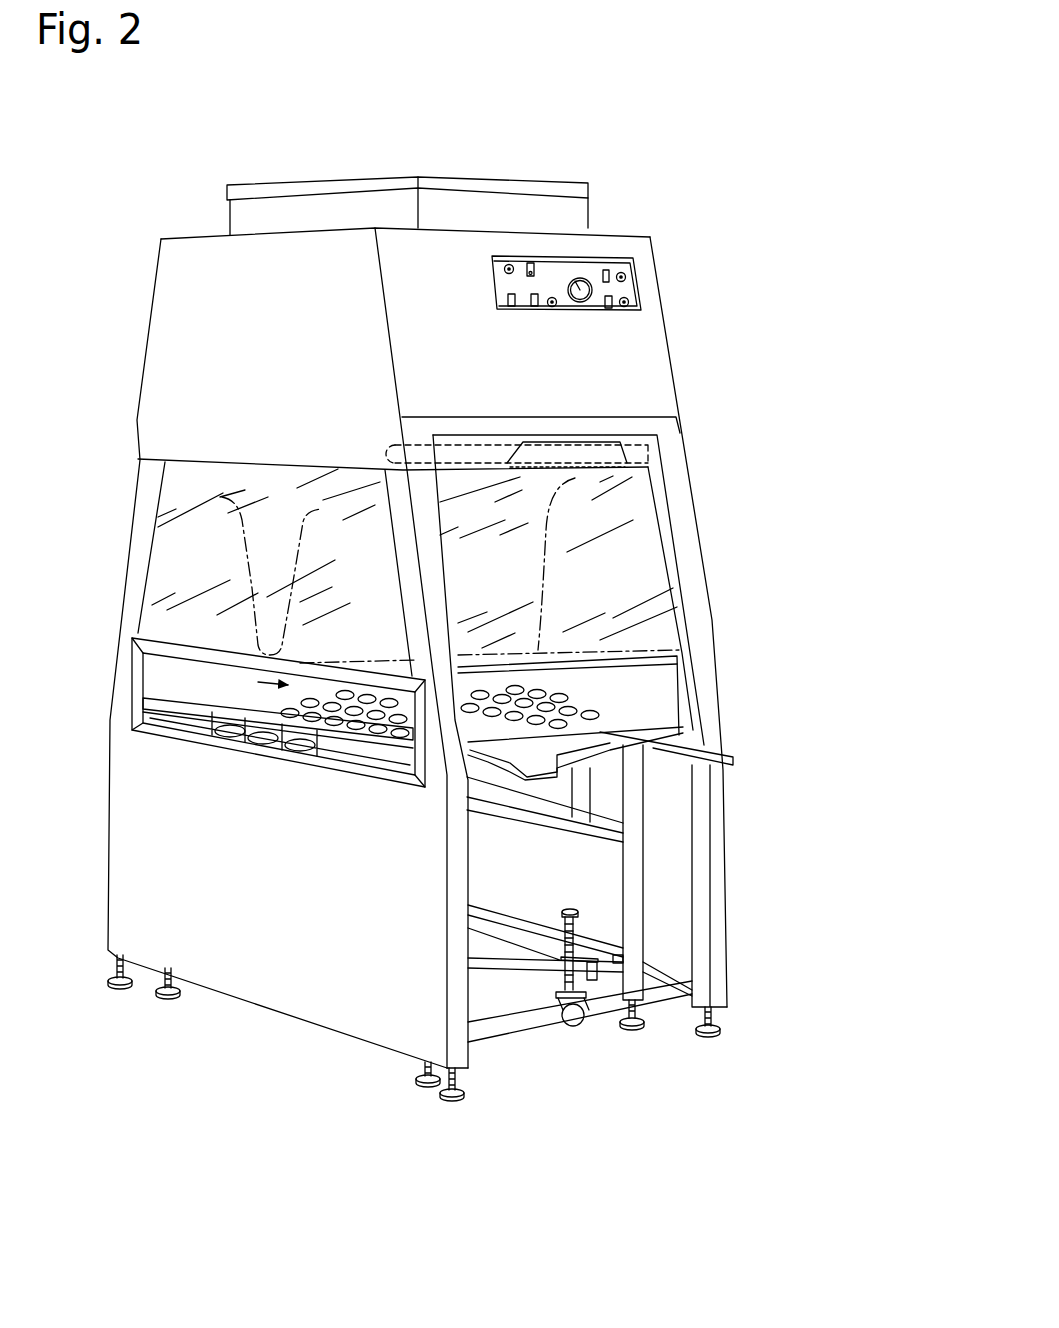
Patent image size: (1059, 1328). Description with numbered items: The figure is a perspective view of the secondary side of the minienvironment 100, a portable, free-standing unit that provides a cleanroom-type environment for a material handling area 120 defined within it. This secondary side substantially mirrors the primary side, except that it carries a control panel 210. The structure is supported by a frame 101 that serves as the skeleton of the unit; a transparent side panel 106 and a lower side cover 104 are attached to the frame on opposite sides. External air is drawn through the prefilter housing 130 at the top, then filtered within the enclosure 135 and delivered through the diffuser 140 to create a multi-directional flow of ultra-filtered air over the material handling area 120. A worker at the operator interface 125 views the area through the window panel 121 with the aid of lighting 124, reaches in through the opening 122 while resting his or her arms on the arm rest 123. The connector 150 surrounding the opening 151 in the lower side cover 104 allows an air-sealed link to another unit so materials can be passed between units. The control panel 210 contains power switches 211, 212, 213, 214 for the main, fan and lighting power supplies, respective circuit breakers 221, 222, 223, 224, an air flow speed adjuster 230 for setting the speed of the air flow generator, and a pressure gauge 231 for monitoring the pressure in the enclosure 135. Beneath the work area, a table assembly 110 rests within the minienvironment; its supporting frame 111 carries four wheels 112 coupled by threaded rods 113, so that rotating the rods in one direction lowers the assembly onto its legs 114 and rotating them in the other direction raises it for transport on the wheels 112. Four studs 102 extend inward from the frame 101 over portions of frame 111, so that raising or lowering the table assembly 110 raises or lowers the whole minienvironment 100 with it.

The minienvironment 100 is at (697, 108).
The frame 101 is at (673, 972).
The studs 102 is at (623, 963).
The lower side cover 104 is at (135, 788).
The side panel 106 is at (178, 573).
The table assembly 110 is at (140, 722).
The supporting frame 111 is at (638, 977).
The wheels 112 is at (575, 1003).
The threaded rods 113 is at (577, 918).
The legs 114 is at (168, 995).
The material handling area 120 is at (540, 681).
The window panel 121 is at (637, 598).
The opening 122 is at (648, 712).
The arm rest 123 is at (713, 753).
The lighting 124 is at (640, 453).
The operator interface 125 is at (746, 634).
The prefilter housing 130 is at (275, 208).
The enclosure 135 is at (622, 373).
The diffuser 140 is at (222, 480).
The connector 150 is at (135, 651).
The opening 151 is at (190, 678).
The control panel 210 is at (597, 304).
The power switch 211 is at (508, 297).
The power switch 212 is at (531, 306).
The power switch 213 is at (605, 308).
The power switch 214 is at (609, 272).
The circuit breaker 221 is at (506, 266).
The circuit breaker 222 is at (552, 306).
The circuit breaker 223 is at (628, 300).
The circuit breaker 224 is at (625, 276).
The air flow speed adjuster 230 is at (529, 263).
The pressure gauge 231 is at (585, 280).